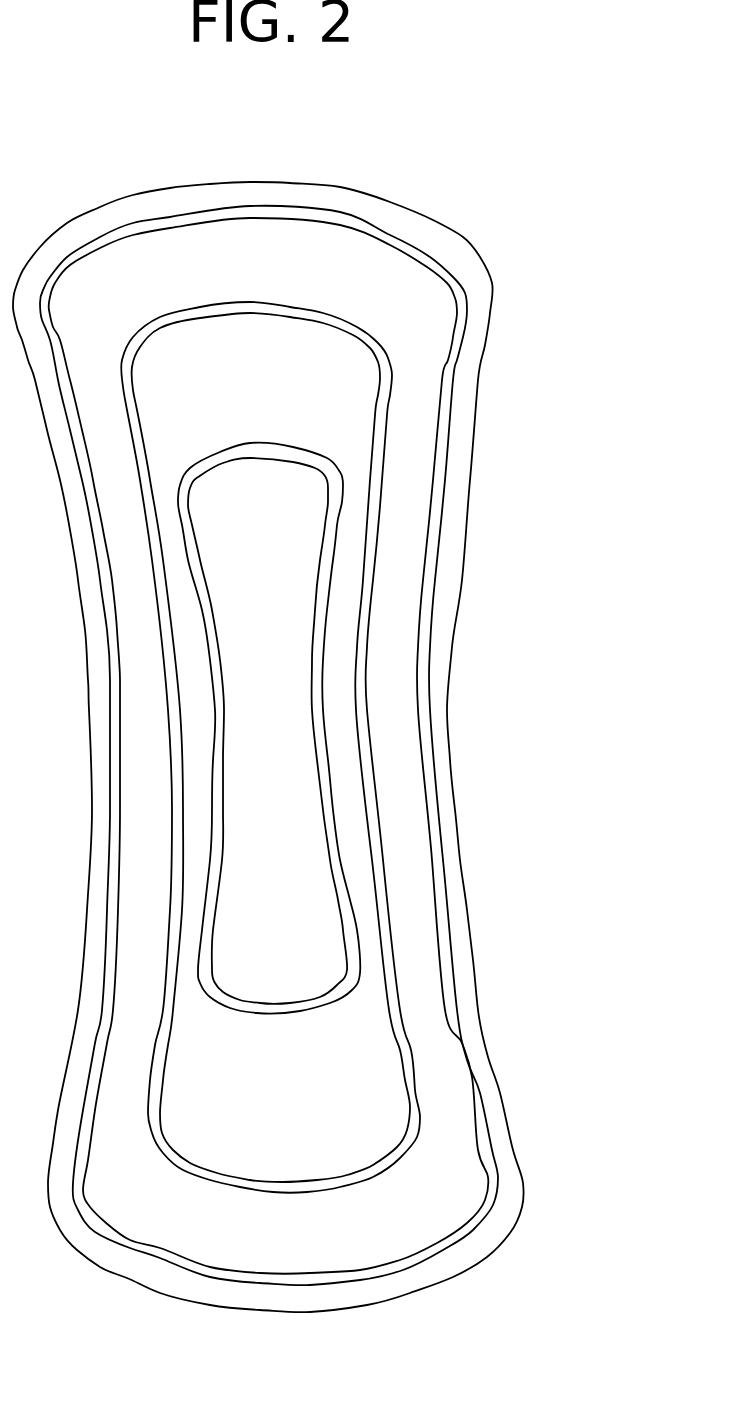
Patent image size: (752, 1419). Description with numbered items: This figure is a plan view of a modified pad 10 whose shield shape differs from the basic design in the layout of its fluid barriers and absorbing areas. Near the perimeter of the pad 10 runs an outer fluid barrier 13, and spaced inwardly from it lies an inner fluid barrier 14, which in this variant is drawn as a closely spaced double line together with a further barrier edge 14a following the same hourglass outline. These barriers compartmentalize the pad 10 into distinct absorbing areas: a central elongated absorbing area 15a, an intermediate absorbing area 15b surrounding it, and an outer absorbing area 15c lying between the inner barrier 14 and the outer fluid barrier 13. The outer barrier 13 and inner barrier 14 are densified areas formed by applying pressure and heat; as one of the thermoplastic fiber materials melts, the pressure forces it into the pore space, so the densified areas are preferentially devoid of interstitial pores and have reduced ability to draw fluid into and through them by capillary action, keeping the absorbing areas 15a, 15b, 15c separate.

The pad 10 is at (312, 742).
The outer fluid barrier 13 is at (488, 1147).
The inner fluid barrier 14 is at (413, 1090).
The topsheet inner edge 14a is at (350, 968).
The absorbing area 15a is at (303, 880).
The absorbing area 15b is at (345, 795).
The third absorbent layer 15c is at (400, 707).